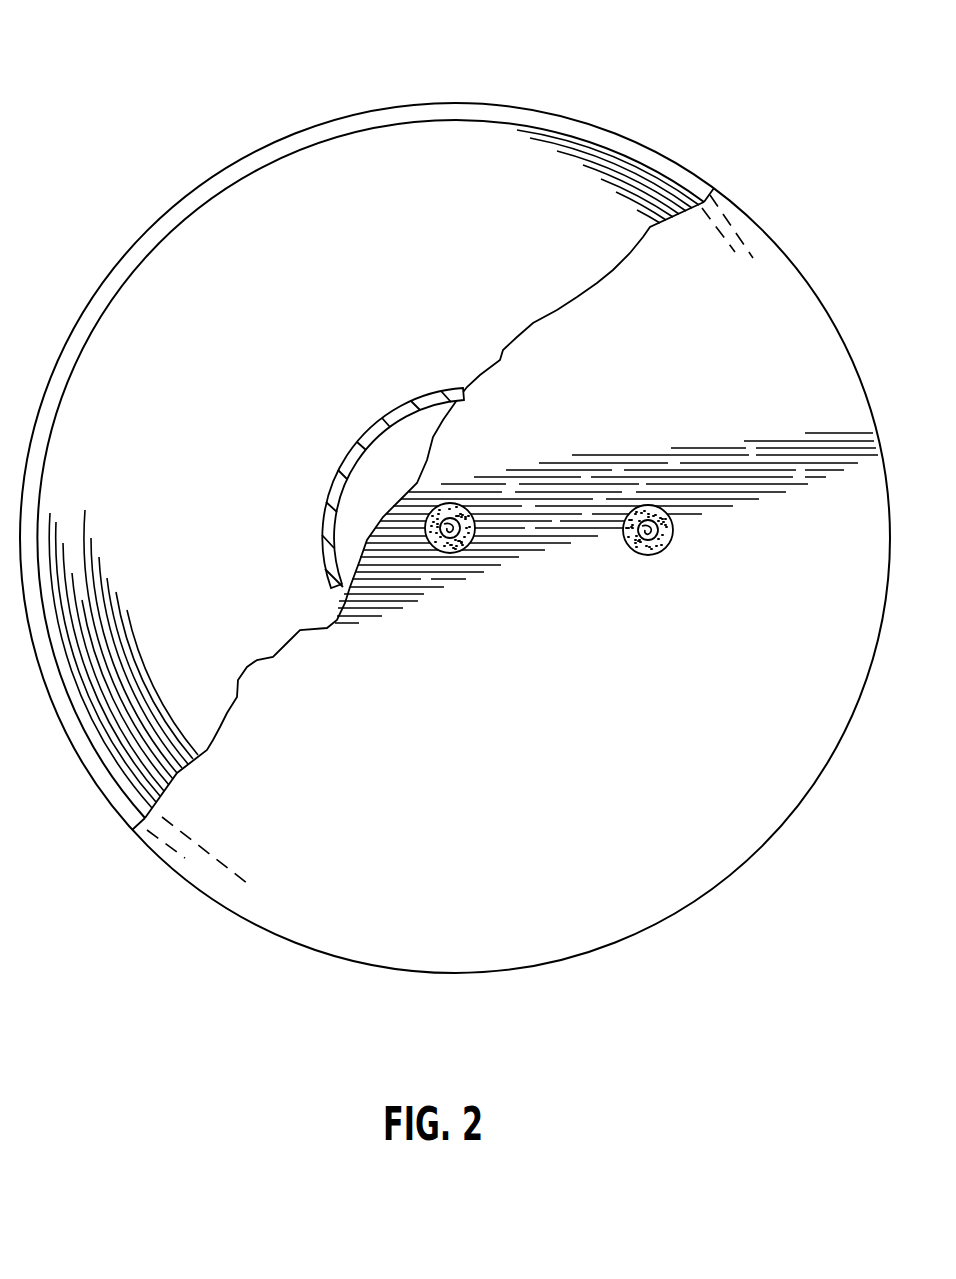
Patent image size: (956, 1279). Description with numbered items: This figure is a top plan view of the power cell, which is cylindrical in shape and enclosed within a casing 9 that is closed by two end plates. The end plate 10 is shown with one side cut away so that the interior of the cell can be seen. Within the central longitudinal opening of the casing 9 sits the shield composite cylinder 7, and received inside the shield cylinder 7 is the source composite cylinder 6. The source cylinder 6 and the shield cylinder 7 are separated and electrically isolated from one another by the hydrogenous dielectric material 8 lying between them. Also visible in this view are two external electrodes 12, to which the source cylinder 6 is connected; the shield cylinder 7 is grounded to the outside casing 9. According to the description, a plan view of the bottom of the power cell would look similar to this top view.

The source composite cylinder 6 is at (370, 484).
The shield composite cylinder 7 is at (170, 265).
The hydrogenous dielectric material 8 is at (443, 397).
The casing 9 is at (443, 105).
The end plate 10 is at (260, 800).
The external electrode 12 is at (445, 535).